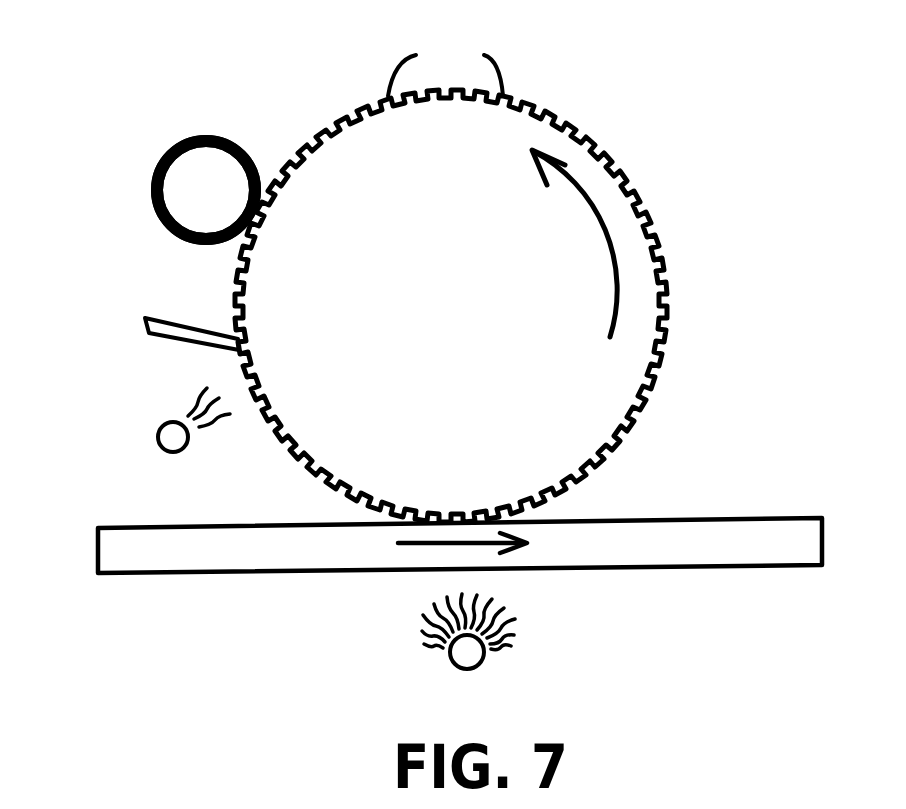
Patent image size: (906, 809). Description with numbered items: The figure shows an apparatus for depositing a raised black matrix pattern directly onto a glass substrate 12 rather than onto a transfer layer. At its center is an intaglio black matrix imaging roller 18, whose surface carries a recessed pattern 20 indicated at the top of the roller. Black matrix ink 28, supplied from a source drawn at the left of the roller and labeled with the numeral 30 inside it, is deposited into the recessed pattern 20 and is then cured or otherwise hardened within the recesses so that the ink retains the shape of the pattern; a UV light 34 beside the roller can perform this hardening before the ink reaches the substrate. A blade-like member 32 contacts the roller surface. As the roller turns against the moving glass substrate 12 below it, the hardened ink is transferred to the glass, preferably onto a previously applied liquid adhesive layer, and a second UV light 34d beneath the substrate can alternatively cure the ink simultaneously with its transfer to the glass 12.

The glass substrate 12 is at (98, 563).
The intaglio black matrix imaging roller 18 is at (456, 317).
The recessed pattern 20 is at (445, 60).
The black matrix ink 28 is at (153, 202).
The roller core 30 is at (232, 213).
The cleaning blade 32 is at (145, 330).
The UV light 34 is at (157, 443).
The UV light 34d is at (455, 665).